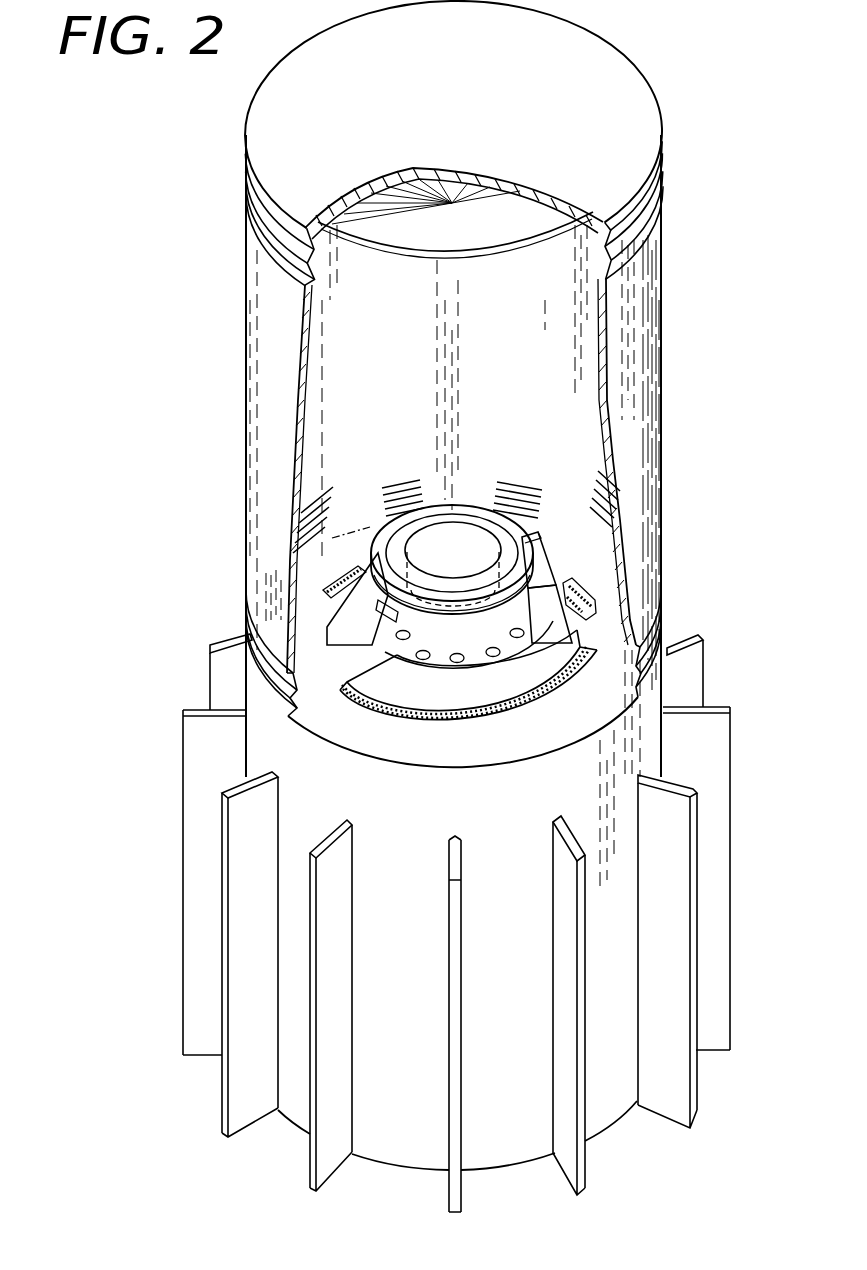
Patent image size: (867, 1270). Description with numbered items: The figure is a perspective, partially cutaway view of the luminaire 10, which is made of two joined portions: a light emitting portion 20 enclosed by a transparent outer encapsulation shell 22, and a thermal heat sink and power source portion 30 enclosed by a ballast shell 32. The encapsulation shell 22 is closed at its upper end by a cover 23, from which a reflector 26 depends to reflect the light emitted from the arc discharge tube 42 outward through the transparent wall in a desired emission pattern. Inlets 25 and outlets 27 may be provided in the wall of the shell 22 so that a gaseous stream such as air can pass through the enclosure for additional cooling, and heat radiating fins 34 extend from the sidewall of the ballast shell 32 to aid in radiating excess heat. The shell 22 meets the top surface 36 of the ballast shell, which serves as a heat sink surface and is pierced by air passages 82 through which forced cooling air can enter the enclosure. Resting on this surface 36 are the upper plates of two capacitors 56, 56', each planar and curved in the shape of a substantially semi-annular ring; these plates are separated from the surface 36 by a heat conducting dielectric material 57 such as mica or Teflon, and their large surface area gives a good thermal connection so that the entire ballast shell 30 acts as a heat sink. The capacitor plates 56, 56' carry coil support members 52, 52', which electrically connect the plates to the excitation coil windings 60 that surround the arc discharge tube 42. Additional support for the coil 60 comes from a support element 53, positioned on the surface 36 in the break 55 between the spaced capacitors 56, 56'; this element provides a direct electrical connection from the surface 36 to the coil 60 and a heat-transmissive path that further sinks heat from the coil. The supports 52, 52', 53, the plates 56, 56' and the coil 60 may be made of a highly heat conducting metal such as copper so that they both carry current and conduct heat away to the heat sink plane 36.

The luminaire 10 is at (196, 448).
The light emitting portion 20 is at (720, 88).
The outer encapsulation shell 22 is at (663, 345).
The cover 23 is at (590, 57).
The inlets 25 is at (290, 672).
The reflector 26 is at (422, 249).
The outlets 27 is at (598, 234).
The thermal heat sink and power source portion 30 is at (412, 1180).
The ballast shell 32 is at (300, 847).
The heat radiating fins 34 is at (587, 1173).
The top surface of ballast shell 36 is at (372, 756).
The arc discharge tube 42 is at (463, 530).
The coil support member 52 is at (536, 635).
The coil support member 52' is at (562, 531).
The support element 53 is at (355, 632).
The break 55 is at (360, 668).
The capacitor plate 56 is at (468, 693).
The capacitor plate 56' is at (456, 516).
The heat conducting dielectric material 57 is at (345, 591).
The excitation coil windings 60 is at (438, 503).
The air passages 82 is at (486, 648).